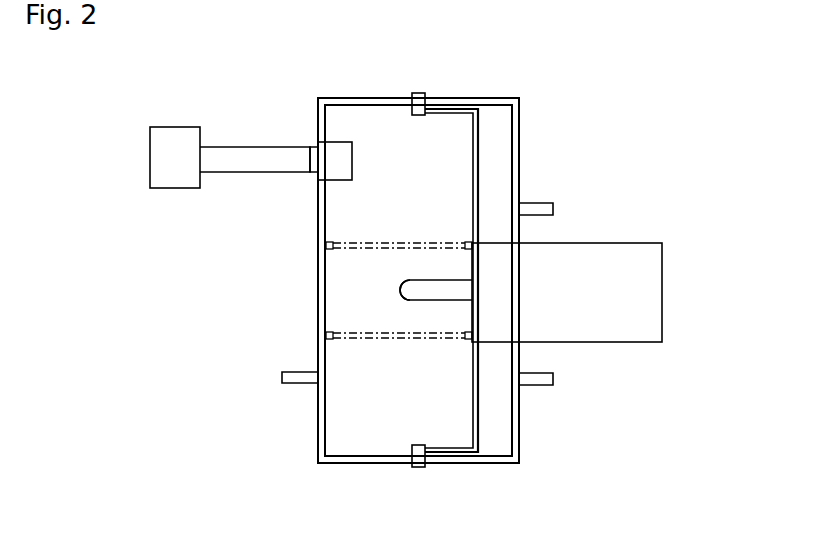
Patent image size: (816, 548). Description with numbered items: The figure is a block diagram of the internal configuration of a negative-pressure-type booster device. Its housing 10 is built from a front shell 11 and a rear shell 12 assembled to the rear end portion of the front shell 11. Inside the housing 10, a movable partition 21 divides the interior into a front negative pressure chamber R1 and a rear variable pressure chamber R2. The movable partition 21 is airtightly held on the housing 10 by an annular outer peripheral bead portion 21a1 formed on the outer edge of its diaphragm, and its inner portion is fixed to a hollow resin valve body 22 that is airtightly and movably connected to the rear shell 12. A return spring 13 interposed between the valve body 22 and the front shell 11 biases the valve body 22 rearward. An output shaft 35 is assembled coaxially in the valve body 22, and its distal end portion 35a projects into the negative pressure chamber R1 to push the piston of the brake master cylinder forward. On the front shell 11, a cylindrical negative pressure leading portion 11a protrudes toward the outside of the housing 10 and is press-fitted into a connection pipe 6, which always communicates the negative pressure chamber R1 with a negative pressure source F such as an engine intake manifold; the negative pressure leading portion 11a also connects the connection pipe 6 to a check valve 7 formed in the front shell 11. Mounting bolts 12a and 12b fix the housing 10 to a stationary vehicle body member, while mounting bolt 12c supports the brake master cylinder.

The housing 10 is at (520, 138).
The front shell 11 is at (343, 98).
The negative pressure leading portion 11a is at (313, 165).
The rear shell 12 is at (480, 98).
The mounting bolt 12a is at (530, 202).
The mounting bolt 12b is at (542, 380).
The mounting bolt 12c is at (305, 385).
The return spring 13 is at (327, 243).
The movable partition 21 is at (478, 422).
The outer peripheral bead portion 21a1 is at (418, 93).
The valve body 22 is at (582, 257).
The output shaft 35 is at (428, 295).
The distal end portion 35a is at (400, 288).
The connection pipe 6 is at (230, 157).
The check valve 7 is at (328, 153).
The negative pressure source F is at (165, 137).
The negative pressure chamber R1 is at (367, 420).
The variable pressure chamber R2 is at (497, 407).